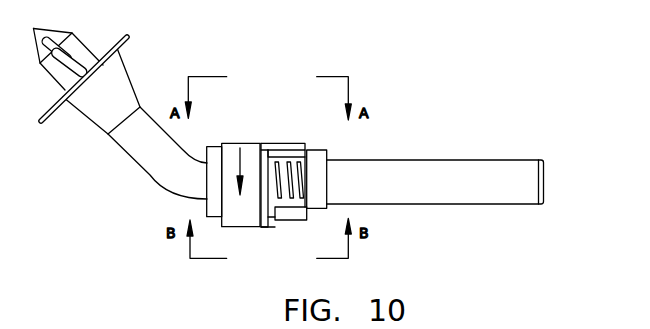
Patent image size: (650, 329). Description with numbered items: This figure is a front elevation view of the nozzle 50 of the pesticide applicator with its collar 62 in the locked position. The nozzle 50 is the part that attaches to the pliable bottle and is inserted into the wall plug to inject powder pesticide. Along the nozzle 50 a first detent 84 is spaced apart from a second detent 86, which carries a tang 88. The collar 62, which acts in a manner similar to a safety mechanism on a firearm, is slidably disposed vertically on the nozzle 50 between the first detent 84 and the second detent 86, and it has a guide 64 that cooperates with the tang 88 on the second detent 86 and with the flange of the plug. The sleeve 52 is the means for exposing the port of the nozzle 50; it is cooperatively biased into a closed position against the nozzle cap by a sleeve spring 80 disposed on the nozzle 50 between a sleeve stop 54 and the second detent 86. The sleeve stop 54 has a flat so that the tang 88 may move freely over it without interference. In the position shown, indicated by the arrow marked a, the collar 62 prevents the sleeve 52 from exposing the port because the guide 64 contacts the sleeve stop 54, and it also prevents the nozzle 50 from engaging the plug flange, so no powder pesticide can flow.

The nozzle 50 is at (130, 194).
The sleeve 52 is at (452, 160).
The sleeve stop 54 is at (327, 152).
The collar 62 is at (240, 128).
The guide 64 is at (299, 145).
The sleeve spring 80 is at (285, 146).
The first detent 84 is at (208, 145).
The second detent 86 is at (266, 238).
The tang 88 is at (295, 221).